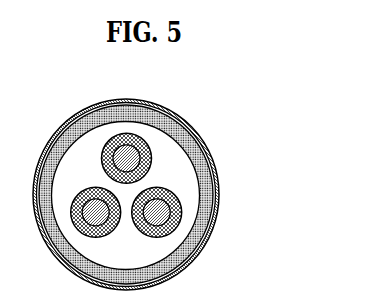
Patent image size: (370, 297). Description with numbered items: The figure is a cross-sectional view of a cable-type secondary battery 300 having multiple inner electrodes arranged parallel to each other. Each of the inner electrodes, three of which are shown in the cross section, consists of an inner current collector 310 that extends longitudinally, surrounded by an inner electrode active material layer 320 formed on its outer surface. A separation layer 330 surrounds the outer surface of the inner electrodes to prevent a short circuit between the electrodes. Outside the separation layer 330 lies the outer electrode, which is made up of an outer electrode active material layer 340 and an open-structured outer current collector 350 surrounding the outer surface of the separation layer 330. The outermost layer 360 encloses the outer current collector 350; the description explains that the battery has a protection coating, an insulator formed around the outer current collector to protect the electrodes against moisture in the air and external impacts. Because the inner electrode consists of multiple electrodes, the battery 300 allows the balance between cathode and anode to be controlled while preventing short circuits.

The cable-type secondary battery 300 is at (216, 99).
The inner current collector 310 is at (121, 142).
The inner electrode active material layer 320 is at (126, 143).
The separation layer 330 is at (182, 164).
The outer electrode active material layer 340 is at (216, 191).
The outer current collector 350 is at (204, 178).
The outer sheath 360 is at (220, 208).